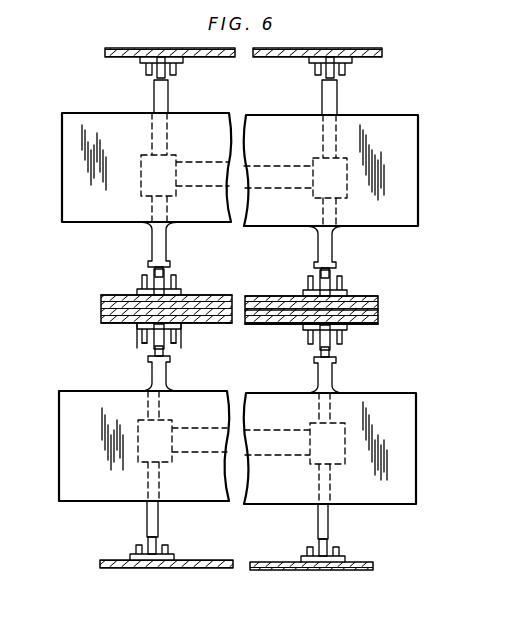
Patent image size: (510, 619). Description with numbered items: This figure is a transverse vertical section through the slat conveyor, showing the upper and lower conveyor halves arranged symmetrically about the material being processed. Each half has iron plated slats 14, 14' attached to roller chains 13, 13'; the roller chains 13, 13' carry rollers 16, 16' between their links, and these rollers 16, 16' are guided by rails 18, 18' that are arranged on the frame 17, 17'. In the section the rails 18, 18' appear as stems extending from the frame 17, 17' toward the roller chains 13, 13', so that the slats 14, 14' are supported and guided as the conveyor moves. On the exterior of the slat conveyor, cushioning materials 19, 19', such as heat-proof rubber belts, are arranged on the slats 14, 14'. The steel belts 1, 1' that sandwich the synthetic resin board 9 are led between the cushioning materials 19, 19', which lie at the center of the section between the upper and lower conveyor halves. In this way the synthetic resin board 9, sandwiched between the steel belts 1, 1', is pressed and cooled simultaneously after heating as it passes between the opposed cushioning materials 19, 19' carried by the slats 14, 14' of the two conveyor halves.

The steel belt 1 is at (337, 302).
The steel belt 1' is at (349, 334).
The synthetic resin board 9 is at (380, 310).
The roller chain 13 is at (244, 200).
The roller chain 13' is at (237, 443).
The iron plated slat 14 is at (136, 177).
The iron plated slat 14' is at (133, 445).
The roller 16 is at (241, 176).
The roller 16' is at (241, 440).
The frame 17 is at (263, 169).
The frame 17' is at (266, 447).
The rail 18 is at (229, 245).
The rail 18' is at (228, 374).
The cushioning material 19 is at (223, 160).
The cushioning material 19' is at (327, 451).